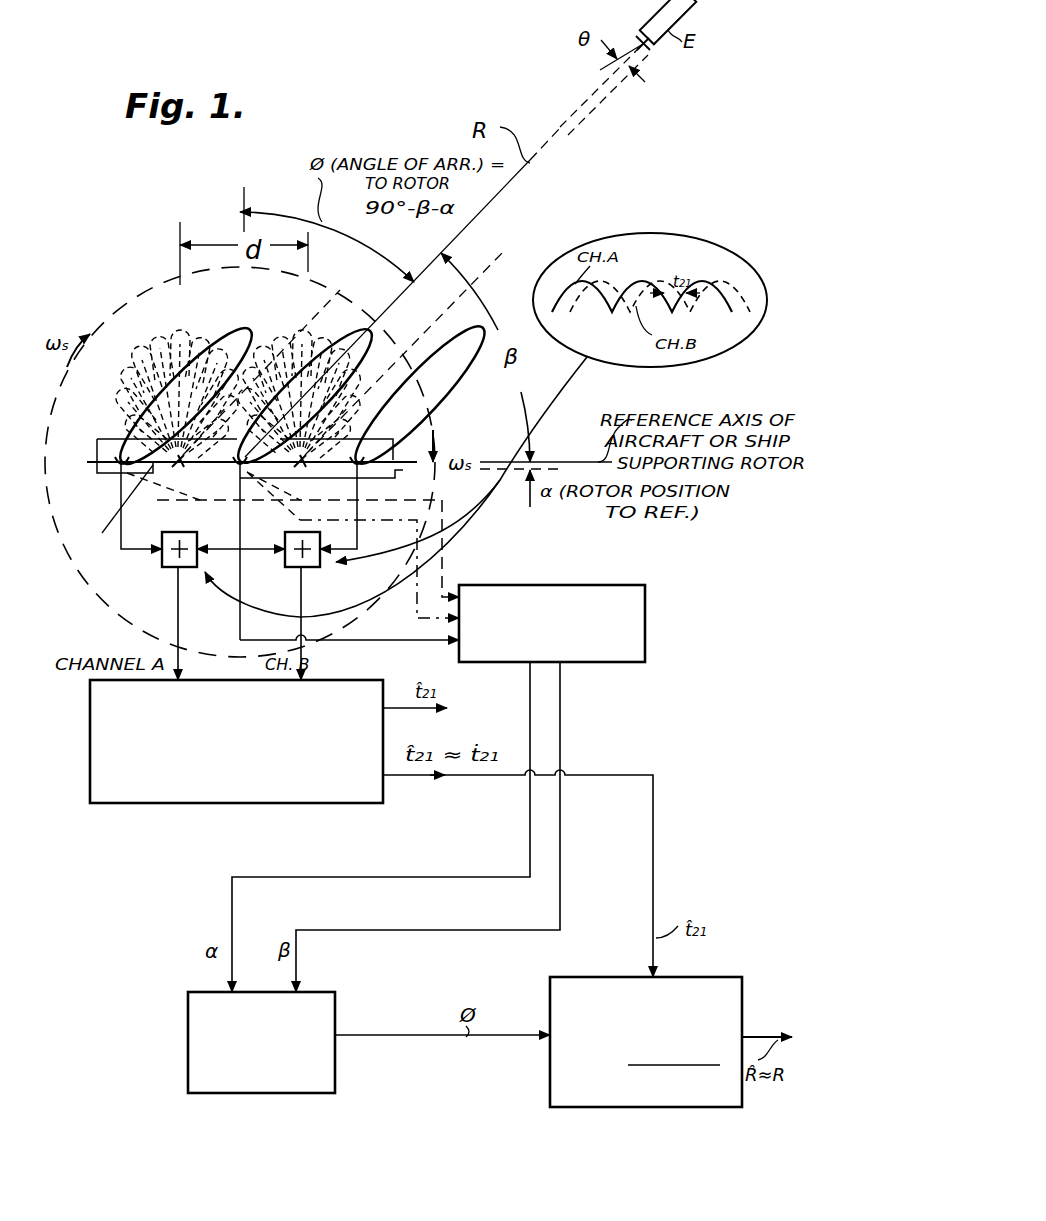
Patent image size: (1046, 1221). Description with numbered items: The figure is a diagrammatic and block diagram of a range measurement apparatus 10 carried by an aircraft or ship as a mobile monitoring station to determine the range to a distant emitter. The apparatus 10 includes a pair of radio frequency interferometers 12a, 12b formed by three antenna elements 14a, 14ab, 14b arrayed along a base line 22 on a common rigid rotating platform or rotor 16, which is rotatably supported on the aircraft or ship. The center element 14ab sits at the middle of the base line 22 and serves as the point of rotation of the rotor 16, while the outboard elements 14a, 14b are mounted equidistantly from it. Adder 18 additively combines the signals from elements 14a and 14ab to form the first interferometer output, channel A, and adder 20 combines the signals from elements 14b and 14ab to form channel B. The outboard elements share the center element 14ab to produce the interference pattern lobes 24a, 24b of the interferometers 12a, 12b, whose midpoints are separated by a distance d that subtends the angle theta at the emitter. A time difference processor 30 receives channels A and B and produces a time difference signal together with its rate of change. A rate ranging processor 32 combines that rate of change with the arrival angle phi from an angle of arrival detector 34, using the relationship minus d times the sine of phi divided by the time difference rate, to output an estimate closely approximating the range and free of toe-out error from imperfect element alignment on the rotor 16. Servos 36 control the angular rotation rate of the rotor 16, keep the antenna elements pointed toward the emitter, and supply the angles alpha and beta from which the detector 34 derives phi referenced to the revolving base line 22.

The apparatus 10 is at (112, 290).
The radio frequency interferometer 12a is at (118, 430).
The radio frequency interferometer 12b is at (404, 432).
The antenna element 14a is at (118, 476).
The antenna element 14ab is at (236, 479).
The antenna element 14b is at (378, 503).
The rotor 16 is at (97, 445).
The adder 18 is at (176, 530).
The adder 20 is at (292, 532).
The base line 22 is at (113, 514).
The interference pattern lobe 24a is at (140, 340).
The interference pattern lobe 24b is at (297, 318).
The time difference processor 30 is at (165, 803).
The rate ranging processor 32 is at (718, 977).
The angle of arrival detector 34 is at (188, 1013).
The servos 36 is at (545, 585).